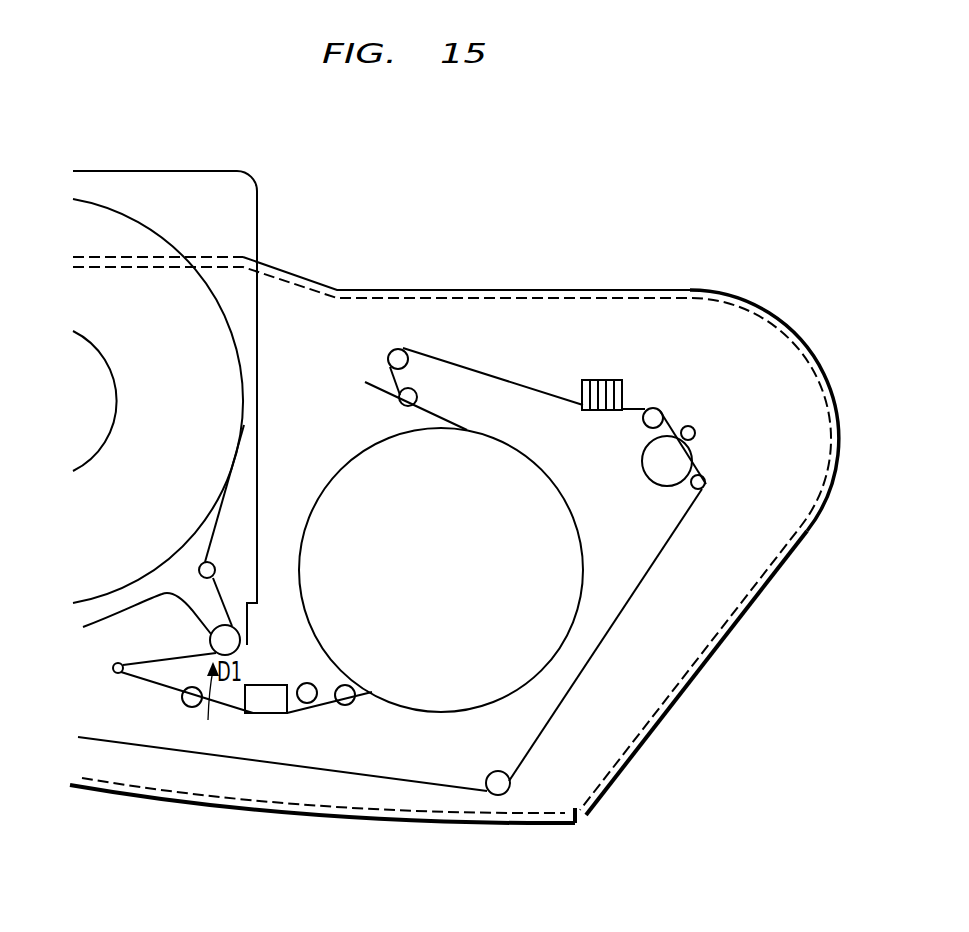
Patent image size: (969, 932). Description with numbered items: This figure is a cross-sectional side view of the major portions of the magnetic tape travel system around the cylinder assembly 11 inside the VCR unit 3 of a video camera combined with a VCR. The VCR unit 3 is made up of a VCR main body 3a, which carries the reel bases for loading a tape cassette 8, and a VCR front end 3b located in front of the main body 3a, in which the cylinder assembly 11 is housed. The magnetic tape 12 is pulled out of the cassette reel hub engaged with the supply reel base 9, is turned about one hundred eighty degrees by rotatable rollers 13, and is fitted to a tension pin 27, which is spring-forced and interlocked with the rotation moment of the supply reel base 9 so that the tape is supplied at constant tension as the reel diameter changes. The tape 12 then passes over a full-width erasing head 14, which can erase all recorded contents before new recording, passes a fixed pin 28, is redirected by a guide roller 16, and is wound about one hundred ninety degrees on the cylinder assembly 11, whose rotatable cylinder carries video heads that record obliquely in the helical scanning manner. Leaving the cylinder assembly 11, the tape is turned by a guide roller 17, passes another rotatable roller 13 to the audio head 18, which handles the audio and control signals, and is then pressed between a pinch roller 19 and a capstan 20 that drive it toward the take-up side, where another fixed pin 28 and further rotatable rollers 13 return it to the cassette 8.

The VCR unit 3 is at (233, 117).
The VCR main body 3a is at (112, 169).
The VCR front end 3b is at (503, 288).
The tape cassette 8 is at (238, 199).
The supply reel base 9 is at (203, 322).
The cylinder assembly 11 is at (356, 470).
The magnetic tape 12 is at (490, 372).
The rotatable roller 13 is at (398, 349).
The full-width erasing head 14 is at (260, 703).
The guide roller 16 is at (345, 706).
The guide roller 17 is at (403, 399).
The audio head 18 is at (600, 387).
The pinch roller 19 is at (653, 470).
The capstan 20 is at (695, 433).
The tension pin 27 is at (185, 703).
The fixed pin 28 is at (701, 487).